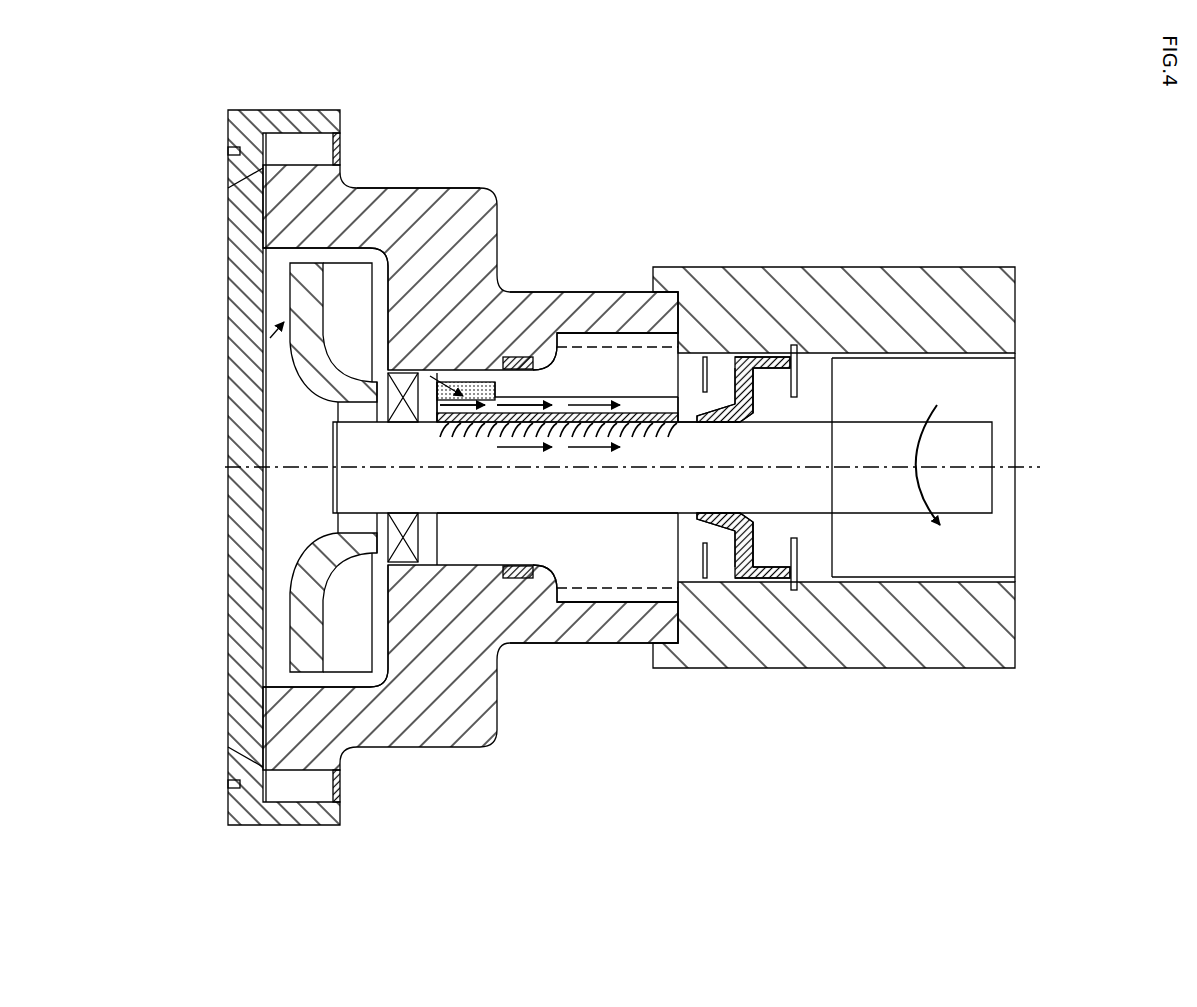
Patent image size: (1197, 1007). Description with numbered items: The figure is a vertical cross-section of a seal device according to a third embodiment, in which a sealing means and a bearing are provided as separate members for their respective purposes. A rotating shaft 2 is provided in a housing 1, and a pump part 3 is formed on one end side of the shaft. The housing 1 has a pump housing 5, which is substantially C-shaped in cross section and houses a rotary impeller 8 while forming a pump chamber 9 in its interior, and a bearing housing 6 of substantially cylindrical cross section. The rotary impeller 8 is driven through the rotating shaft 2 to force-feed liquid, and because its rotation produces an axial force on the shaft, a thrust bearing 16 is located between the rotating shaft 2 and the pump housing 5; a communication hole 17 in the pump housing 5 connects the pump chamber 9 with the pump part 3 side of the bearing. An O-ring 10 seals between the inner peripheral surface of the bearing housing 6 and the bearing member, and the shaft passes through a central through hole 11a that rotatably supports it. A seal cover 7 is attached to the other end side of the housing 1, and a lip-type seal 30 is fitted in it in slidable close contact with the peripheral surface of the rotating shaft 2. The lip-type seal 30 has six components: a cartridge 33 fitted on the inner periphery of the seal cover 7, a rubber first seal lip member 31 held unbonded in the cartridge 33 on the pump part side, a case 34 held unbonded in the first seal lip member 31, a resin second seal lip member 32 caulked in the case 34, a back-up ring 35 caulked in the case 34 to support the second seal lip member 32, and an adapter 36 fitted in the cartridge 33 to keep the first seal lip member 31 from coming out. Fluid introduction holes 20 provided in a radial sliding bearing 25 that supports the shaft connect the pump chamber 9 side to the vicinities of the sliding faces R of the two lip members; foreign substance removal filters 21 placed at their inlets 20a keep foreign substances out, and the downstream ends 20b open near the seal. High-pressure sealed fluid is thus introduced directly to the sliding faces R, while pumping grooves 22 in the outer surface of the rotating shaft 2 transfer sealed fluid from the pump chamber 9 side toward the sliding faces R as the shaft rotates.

The housing 1 is at (457, 187).
The rotating shaft 2 is at (353, 450).
The pump part 3 is at (245, 335).
The pump housing 5 is at (430, 290).
The bearing housing 6 is at (563, 293).
The seal cover 7 is at (903, 280).
The rotary impeller 8 is at (352, 325).
The pump chamber 9 is at (385, 287).
The O-ring 10 is at (515, 357).
The through hole 11a is at (580, 500).
The thrust bearing 16 is at (377, 550).
The communication hole 17 is at (415, 372).
The fluid introduction hole 20 is at (578, 400).
The inlet 20a is at (432, 400).
The sleeve second end 20b is at (679, 416).
The foreign substance removal filter 21 is at (466, 385).
The pumping grooves 22 is at (477, 437).
The radial sliding bearing 25 is at (643, 352).
The lip-type seal 30 is at (795, 364).
The first seal lip member 31 is at (718, 422).
The second seal lip member 32 is at (760, 420).
The cartridge 33 is at (706, 357).
The case 34 is at (752, 410).
The back-up ring 35 is at (797, 397).
The adapter 36 is at (748, 362).
The sliding faces R is at (705, 500).